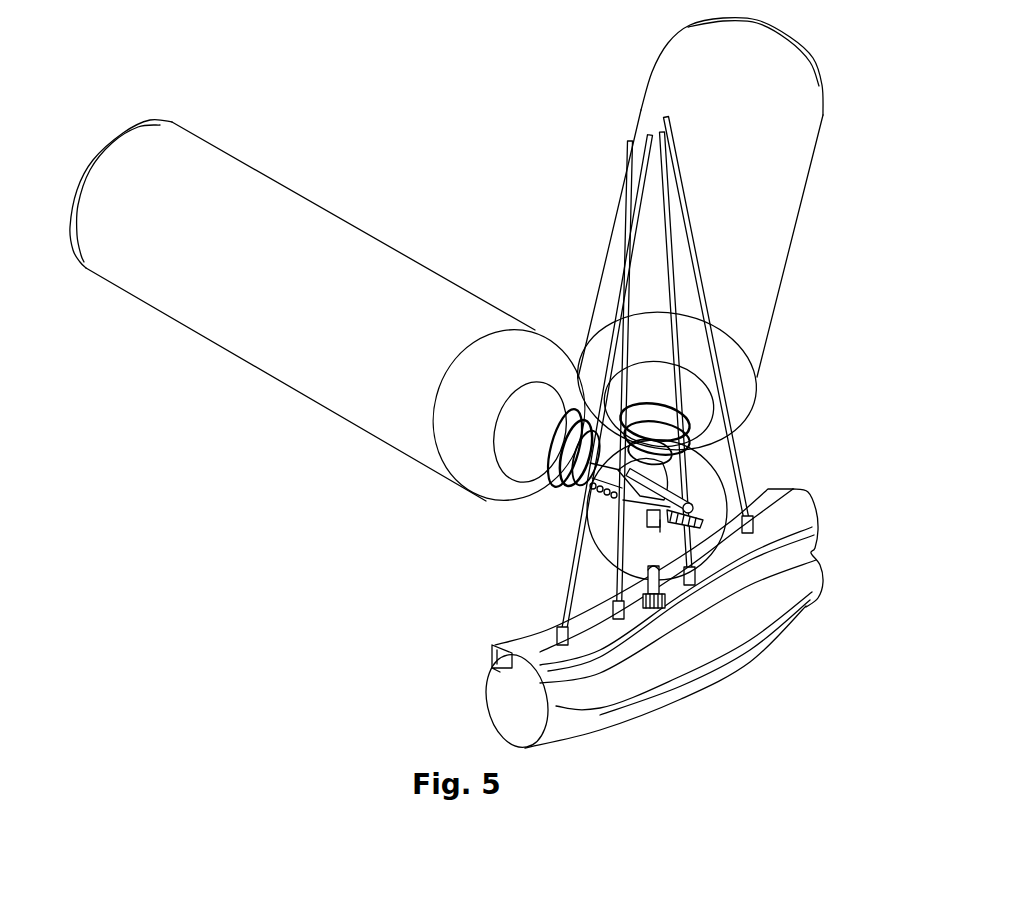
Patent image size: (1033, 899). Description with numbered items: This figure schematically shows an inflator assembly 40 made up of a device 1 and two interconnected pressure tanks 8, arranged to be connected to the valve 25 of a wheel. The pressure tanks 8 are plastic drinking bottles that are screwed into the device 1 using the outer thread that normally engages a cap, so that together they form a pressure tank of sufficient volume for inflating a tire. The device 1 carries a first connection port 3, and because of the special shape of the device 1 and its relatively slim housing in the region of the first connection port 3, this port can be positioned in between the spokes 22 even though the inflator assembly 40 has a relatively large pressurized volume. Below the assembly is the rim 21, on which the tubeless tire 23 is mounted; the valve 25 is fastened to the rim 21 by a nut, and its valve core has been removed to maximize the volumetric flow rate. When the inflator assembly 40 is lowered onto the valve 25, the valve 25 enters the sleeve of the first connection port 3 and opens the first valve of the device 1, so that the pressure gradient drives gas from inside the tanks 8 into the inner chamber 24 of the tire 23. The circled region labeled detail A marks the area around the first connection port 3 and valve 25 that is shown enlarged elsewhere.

The device 1 is at (600, 498).
The first connection port 3 is at (695, 528).
The pressure tank 8 is at (97, 135).
The rim 21 is at (783, 523).
The spokes 22 is at (733, 457).
The tubeless tire 23 is at (758, 605).
The inner chamber 24 is at (517, 706).
The valve 25 is at (667, 603).
The inflator assembly 40 is at (382, 121).
The detail A is at (600, 563).